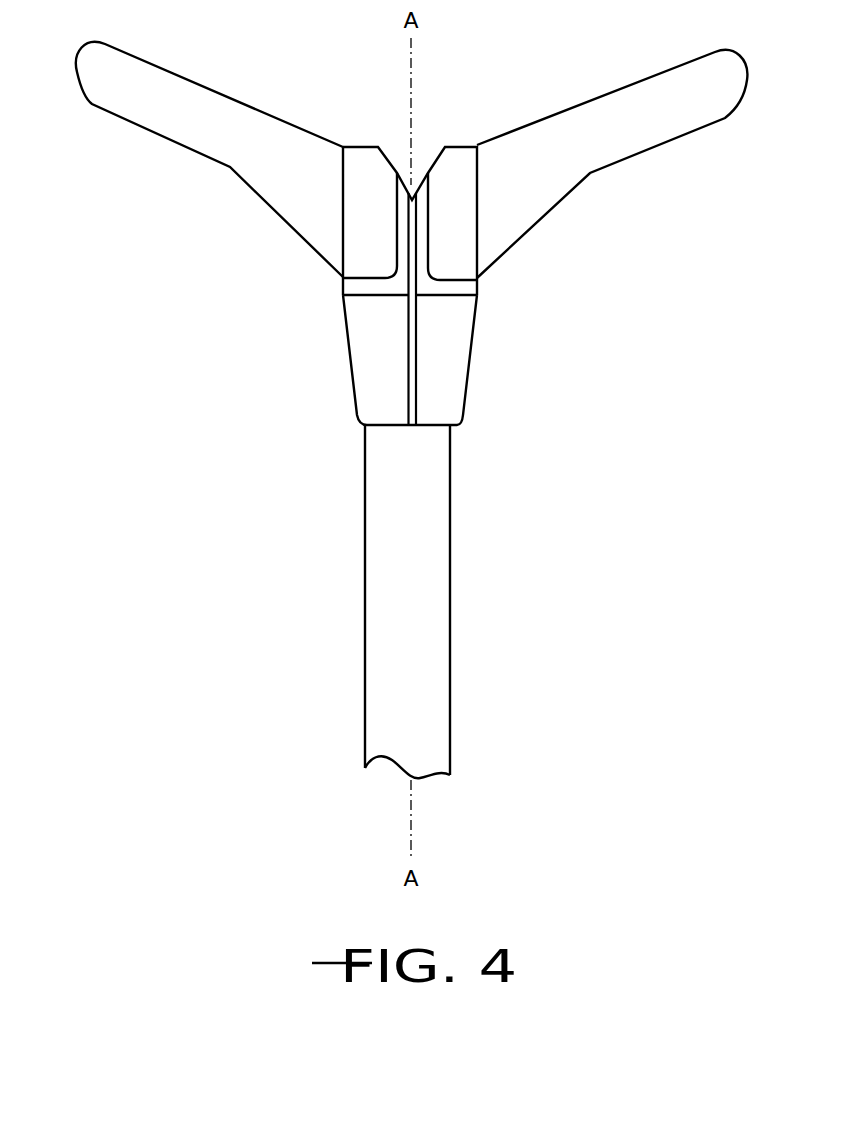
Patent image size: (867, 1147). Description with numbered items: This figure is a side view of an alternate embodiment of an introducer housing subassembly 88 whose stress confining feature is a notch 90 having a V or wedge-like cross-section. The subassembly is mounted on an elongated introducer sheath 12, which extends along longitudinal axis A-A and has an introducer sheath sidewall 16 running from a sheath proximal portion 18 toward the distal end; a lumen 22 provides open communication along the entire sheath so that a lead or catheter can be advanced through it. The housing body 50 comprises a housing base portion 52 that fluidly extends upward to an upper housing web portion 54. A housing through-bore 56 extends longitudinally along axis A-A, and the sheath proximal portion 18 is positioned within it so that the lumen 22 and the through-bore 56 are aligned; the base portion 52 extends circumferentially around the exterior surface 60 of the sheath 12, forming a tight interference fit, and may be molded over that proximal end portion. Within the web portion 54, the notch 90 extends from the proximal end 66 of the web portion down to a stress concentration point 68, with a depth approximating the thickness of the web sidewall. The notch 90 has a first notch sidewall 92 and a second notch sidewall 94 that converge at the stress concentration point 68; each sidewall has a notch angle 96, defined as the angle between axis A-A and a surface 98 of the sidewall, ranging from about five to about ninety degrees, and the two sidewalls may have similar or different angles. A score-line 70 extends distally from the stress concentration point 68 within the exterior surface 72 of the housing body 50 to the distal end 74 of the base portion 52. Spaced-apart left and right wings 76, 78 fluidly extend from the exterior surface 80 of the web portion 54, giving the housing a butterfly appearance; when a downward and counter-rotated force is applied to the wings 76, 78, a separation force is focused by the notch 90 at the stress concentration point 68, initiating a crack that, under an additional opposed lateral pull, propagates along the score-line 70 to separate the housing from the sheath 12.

The introducer sheath 12 is at (433, 623).
The introducer sheath sidewall 16 is at (450, 775).
The sheath proximal portion 18 is at (438, 445).
The lumen 22 is at (396, 773).
The housing body 50 is at (468, 288).
The housing base portion 52 is at (370, 400).
The upper housing web portion 54 is at (455, 160).
The housing through-bore 56 is at (390, 144).
The exterior surface of the introducer sheath 60 is at (392, 548).
The proximal end of the upper web portion 66 is at (358, 146).
The stress concentration point 68 is at (414, 192).
The score-line 70 is at (415, 328).
The exterior surface of the housing body 72 is at (374, 358).
The distal end of the base portion 74 is at (386, 432).
The left wing 76 is at (143, 105).
The right wing 78 is at (678, 125).
The exterior surface of the upper web portion 80 is at (357, 219).
The introducer housing subassembly 88 is at (514, 502).
The notch 90 is at (393, 172).
The first notch sidewall 92 is at (396, 165).
The second notch sidewall 94 is at (414, 197).
The notch angle 96 is at (451, 131).
The surface of the notch sidewall 98 is at (399, 167).